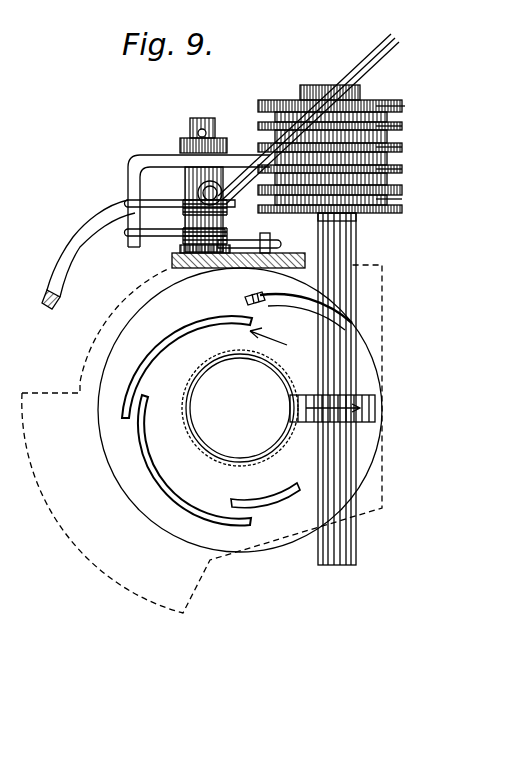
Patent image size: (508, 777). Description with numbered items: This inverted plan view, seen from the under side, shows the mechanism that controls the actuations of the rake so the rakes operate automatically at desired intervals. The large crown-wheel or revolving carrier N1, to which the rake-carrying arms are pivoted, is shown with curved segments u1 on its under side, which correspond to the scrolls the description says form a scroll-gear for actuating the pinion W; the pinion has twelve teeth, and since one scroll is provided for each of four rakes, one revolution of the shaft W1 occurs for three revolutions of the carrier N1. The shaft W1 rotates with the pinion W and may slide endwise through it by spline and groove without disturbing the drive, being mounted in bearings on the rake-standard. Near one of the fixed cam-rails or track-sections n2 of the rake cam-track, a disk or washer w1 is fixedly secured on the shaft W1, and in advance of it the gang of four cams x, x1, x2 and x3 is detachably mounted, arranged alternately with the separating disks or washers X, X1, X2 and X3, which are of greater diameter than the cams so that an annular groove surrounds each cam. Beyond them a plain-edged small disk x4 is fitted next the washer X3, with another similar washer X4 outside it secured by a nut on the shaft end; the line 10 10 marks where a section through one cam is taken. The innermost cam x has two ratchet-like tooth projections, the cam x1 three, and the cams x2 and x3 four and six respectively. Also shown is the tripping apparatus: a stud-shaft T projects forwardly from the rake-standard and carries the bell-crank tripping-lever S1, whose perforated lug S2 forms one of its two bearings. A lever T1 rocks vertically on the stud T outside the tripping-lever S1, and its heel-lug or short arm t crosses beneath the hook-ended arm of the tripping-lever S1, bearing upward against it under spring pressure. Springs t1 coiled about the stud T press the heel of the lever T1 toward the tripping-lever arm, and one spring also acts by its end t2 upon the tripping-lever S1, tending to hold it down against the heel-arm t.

The fixed cam-track section n2 is at (202, 439).
The crown-wheel or revolving carrier N1 is at (240, 410).
The cam segments u1 is at (237, 408).
The shaft W1 is at (356, 535).
The pinion W is at (300, 409).
The washer X4 is at (330, 98).
The separating disk or washer X3 is at (330, 121).
The separating disk or washer X2 is at (330, 141).
The separating disk or washer X1 is at (330, 162).
The separating disk or washer X is at (330, 193).
The plain-edged disk or small washer x4 is at (402, 106).
The cam-wheel x3 is at (402, 126).
The cam-wheel x2 is at (402, 147).
The cam-wheel x1 is at (402, 169).
The innermost cam-wheel x is at (402, 199).
The fixed disk or washer w1 is at (354, 216).
The section line 10 is at (420, 150).
The stud-shaft T is at (202, 118).
The spring end t2 is at (228, 212).
The lever T1 is at (155, 152).
The heel-lug or short arm t is at (127, 184).
The spring t1 is at (158, 229).
The tripping-lever S1 is at (72, 262).
The perforated lug S2 is at (172, 258).